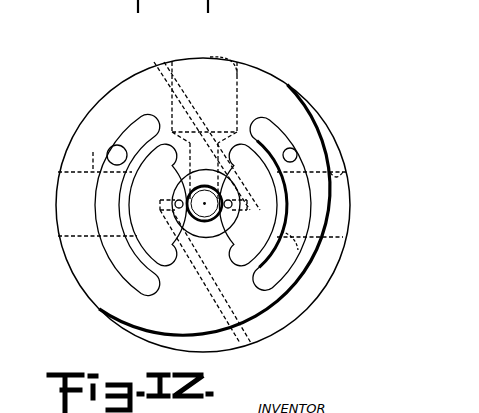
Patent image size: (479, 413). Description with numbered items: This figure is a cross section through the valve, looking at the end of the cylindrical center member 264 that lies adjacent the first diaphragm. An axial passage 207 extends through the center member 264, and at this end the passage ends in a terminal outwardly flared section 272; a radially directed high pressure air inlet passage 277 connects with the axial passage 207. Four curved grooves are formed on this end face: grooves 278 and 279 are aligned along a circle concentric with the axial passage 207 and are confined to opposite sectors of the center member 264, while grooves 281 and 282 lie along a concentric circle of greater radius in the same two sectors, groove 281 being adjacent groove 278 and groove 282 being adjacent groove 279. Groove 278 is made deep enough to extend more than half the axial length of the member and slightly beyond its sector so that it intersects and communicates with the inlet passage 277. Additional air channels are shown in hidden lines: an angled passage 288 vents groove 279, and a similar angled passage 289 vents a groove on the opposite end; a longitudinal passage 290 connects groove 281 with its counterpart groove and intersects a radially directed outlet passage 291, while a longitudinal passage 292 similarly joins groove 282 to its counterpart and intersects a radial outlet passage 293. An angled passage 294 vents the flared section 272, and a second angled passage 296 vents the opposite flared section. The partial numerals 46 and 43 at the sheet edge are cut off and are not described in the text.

The cylindrical center member 264 is at (283, 83).
The longitudinal passage 290 is at (125, 146).
The angled passage 289 is at (110, 152).
The curved groove 282 is at (272, 131).
The curved groove 281 is at (272, 286).
The longitudinal passage 292 is at (296, 153).
The curved groove 278 is at (157, 262).
The curved groove 279 is at (238, 251).
The terminal outwardly flared section 272 is at (203, 176).
The axial passage 207 is at (215, 216).
The high pressure air inlet passage 277 is at (212, 59).
The angled passage 296 is at (162, 85).
The angled passage 294 is at (236, 328).
The radially directed outlet passage 291 is at (66, 172).
The radial outlet passage 293 is at (367, 163).
The angled passage 288 is at (291, 248).
The truncated numeral 46 is at (11, 108).
The truncated numeral 43 is at (10, 192).